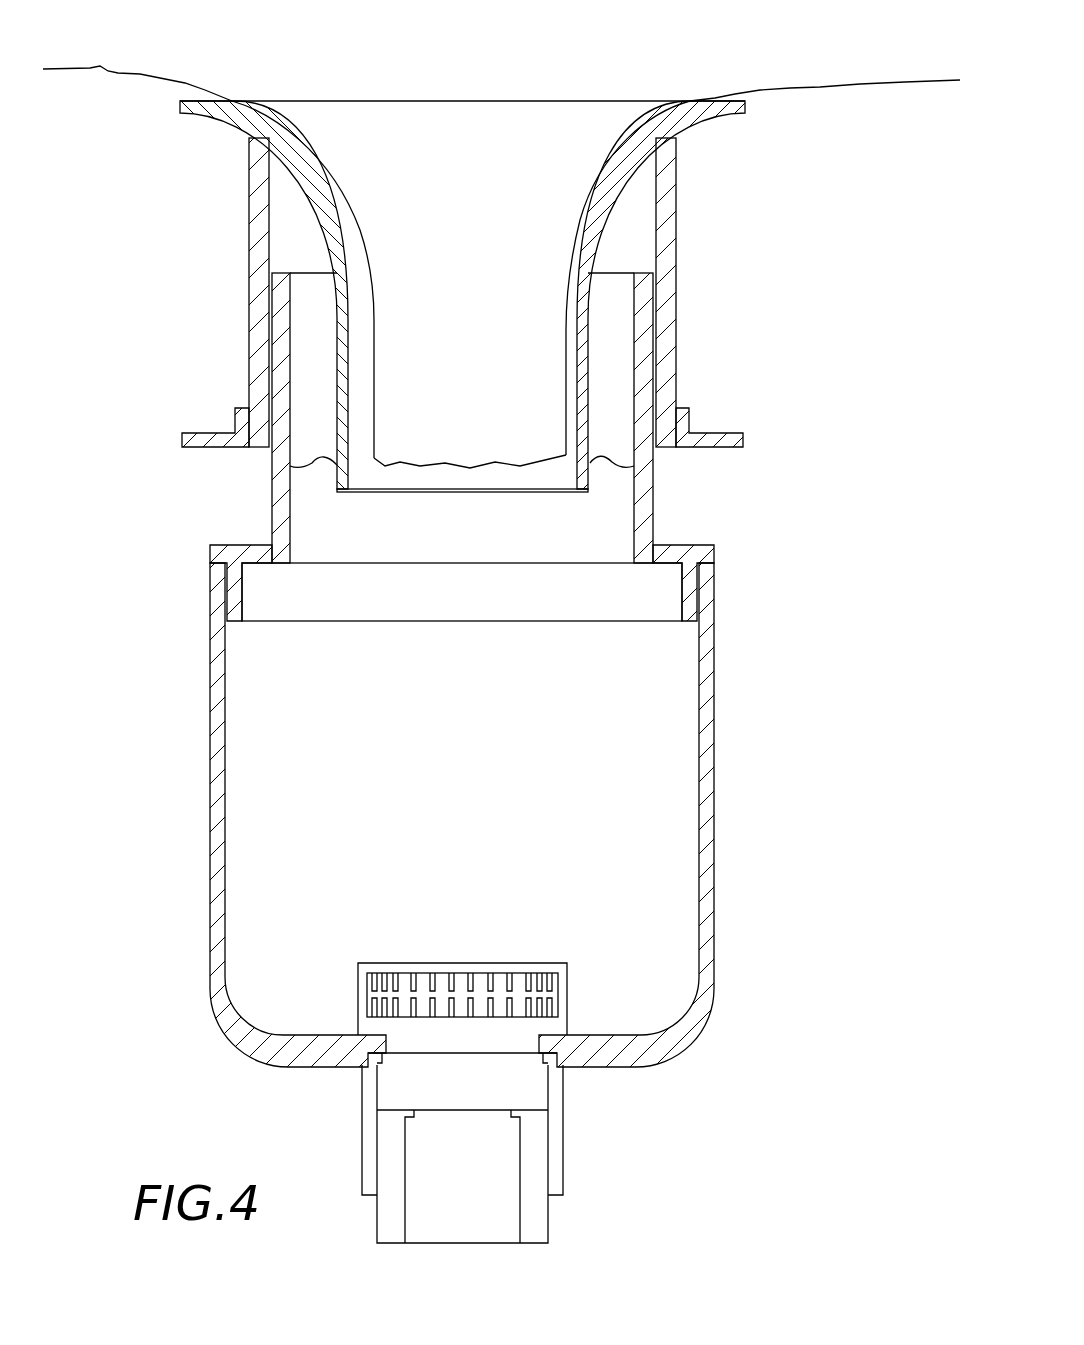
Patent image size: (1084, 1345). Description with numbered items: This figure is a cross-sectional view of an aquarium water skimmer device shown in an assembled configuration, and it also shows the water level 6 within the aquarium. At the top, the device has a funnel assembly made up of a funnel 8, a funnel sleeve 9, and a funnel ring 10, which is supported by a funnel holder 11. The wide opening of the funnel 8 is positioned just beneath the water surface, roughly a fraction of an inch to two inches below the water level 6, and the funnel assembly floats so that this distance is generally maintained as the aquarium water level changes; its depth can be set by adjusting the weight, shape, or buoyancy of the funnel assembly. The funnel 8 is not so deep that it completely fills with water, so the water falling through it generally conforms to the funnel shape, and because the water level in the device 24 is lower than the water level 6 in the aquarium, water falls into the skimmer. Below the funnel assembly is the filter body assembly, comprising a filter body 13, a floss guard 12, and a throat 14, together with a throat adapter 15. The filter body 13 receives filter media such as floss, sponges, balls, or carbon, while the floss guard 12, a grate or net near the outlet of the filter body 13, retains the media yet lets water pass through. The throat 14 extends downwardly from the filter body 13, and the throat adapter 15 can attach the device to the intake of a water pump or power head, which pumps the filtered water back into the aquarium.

The water level 6 is at (102, 58).
The funnel 8 is at (727, 133).
The funnel sleeve 9 is at (693, 188).
The funnel ring 10 is at (757, 437).
The funnel holder 11 is at (658, 497).
The water level in the device 24 is at (385, 474).
The filter body 13 is at (722, 781).
The floss guard 12 is at (585, 995).
The throat 14 is at (586, 1131).
The throat adapter 15 is at (490, 1217).